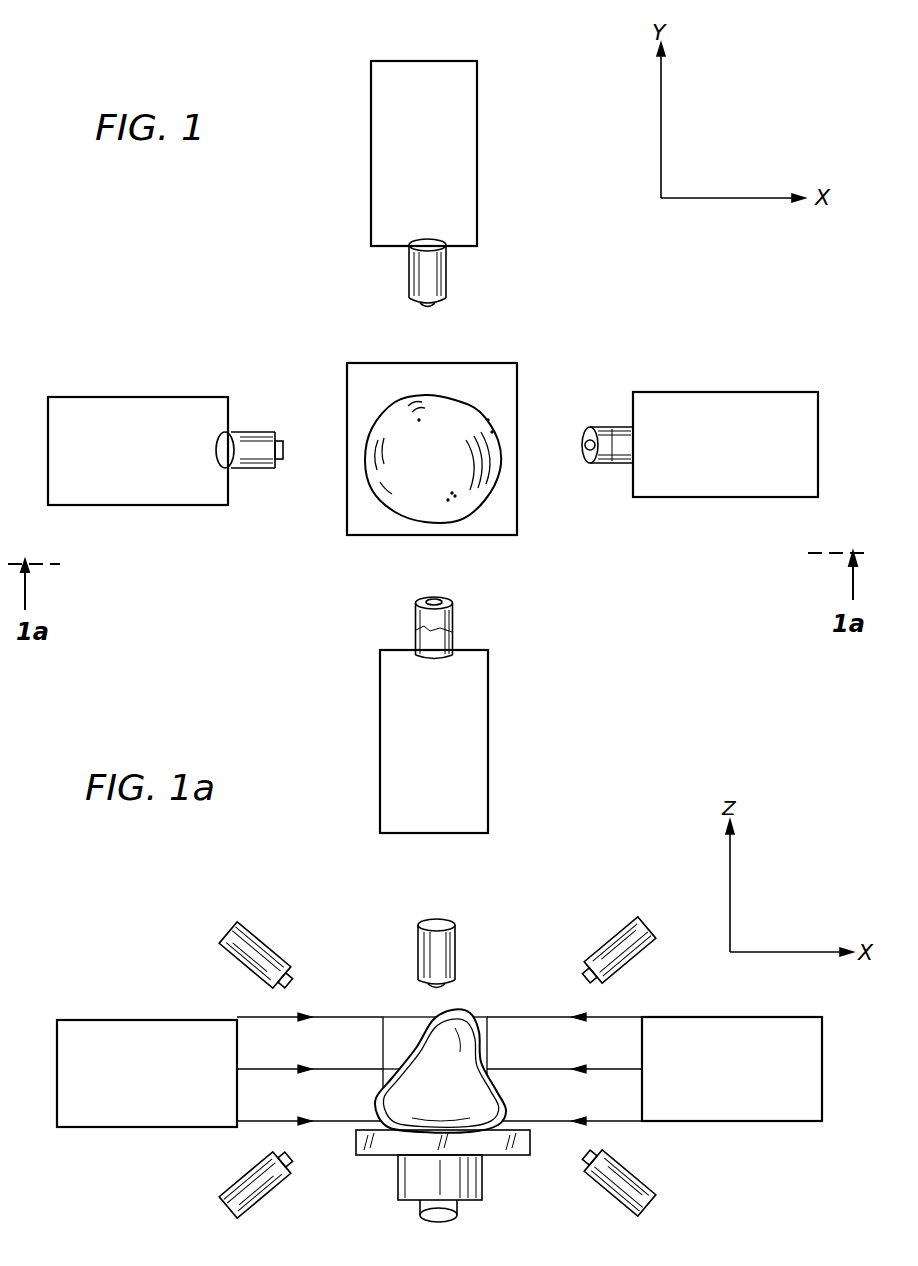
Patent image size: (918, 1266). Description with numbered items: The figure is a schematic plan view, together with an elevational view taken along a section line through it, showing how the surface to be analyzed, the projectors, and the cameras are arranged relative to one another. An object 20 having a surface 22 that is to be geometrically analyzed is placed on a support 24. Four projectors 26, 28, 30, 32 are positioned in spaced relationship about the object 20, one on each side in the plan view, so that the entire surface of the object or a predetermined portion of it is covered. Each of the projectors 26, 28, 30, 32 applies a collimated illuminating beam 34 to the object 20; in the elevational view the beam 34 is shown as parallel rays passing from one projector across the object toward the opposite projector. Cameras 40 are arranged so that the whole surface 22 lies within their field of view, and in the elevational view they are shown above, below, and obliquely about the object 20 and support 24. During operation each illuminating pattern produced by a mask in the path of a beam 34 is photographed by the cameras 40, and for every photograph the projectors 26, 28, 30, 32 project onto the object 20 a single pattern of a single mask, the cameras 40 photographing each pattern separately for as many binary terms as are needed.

In FIG. 1, the object 20 is at (447, 471).
In FIG. 1a, the object 20 is at (448, 1101).
In FIG. 1, the surface 22 is at (465, 493).
In FIG. 1a, the surface 22 is at (478, 1058).
In FIG. 1, the support 24 is at (490, 380).
In FIG. 1a, the support 24 is at (368, 1152).
In FIG. 1, the projector 26 is at (150, 497).
In FIG. 1a, the projector 26 is at (128, 1115).
In FIG. 1, the projector 28 is at (466, 192).
In FIG. 1a, the projector 28 is at (403, 1022).
In FIG. 1, the projector 30 is at (687, 485).
In FIG. 1a, the projector 30 is at (797, 1012).
In FIG. 1, the projector 32 is at (476, 760).
In FIG. 1a, the collimated illuminating beam 34 is at (338, 1018).
In FIG. 1, the camera 40 is at (437, 275).
In FIG. 1a, the camera 40 is at (233, 943).